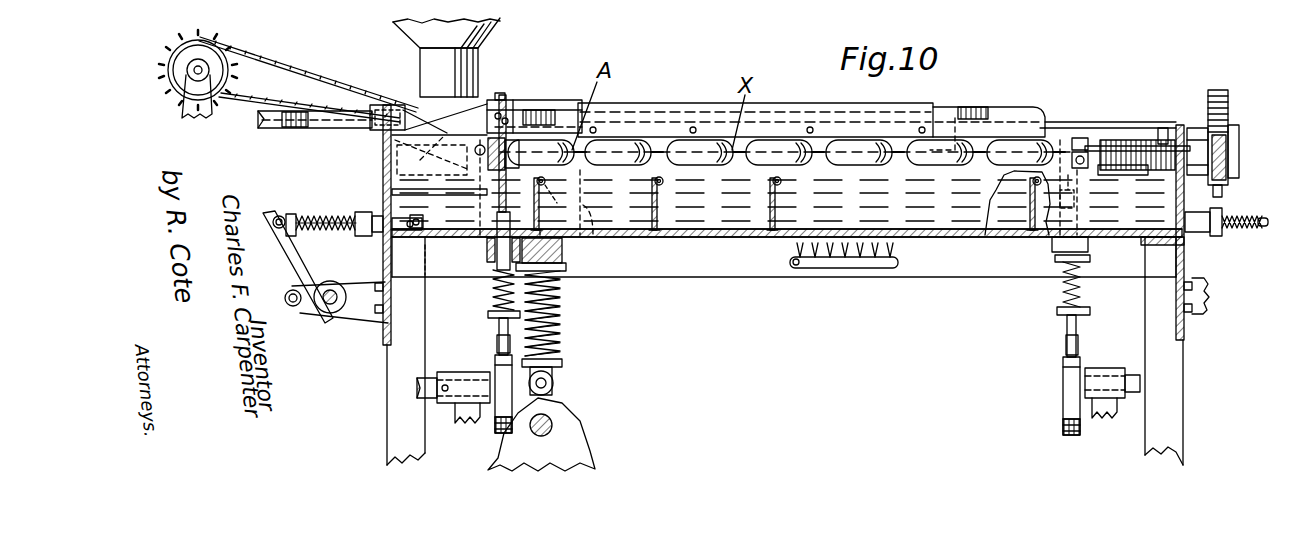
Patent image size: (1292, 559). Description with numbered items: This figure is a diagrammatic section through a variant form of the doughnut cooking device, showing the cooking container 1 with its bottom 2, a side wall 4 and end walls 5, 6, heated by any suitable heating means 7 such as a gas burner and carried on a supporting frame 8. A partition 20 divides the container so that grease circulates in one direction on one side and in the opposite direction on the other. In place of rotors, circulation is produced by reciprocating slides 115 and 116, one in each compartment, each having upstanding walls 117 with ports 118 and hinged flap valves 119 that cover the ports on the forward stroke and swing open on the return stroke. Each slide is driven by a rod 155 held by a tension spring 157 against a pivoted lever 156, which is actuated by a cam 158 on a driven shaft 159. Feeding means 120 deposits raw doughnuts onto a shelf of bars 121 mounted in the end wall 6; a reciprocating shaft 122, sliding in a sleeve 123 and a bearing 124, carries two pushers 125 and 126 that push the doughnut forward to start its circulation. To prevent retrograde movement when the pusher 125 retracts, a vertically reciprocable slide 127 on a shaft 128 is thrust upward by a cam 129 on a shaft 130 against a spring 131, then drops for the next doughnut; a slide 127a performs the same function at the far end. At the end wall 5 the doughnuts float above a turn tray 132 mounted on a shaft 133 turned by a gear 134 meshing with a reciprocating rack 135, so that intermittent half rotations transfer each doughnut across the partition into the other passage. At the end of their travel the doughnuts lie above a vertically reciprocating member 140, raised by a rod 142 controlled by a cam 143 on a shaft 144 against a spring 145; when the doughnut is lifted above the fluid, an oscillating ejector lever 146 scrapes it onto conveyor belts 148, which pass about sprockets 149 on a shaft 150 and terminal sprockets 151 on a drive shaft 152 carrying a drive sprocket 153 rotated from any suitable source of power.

The cooking container 1 is at (767, 242).
The bottom 2 is at (925, 240).
The side wall 4 is at (1062, 121).
The end wall 5 is at (1183, 188).
The end wall 6 is at (392, 191).
The heating means 7 is at (838, 268).
The supporting frame 8 is at (385, 390).
The partition 20 is at (945, 138).
The reciprocating slide 115 is at (735, 233).
The reciprocating slide 116 is at (992, 240).
The upstanding walls 117 is at (655, 186).
The ports 118 is at (772, 207).
The hinged flap valves 119 is at (543, 183).
The feeding means 120 is at (470, 72).
The bars 121 is at (405, 160).
The reciprocating shaft 122 is at (1000, 107).
The sleeve 123 is at (630, 112).
The bearing 124 is at (383, 104).
The pusher 125 is at (505, 130).
The pusher 126 is at (1162, 127).
The vertically reciprocable slide 127 is at (525, 110).
The slide 127a is at (1080, 188).
The shaft 128 is at (493, 300).
The cam 129 is at (495, 365).
The shaft 130 is at (430, 378).
The spring 131 is at (493, 284).
The turn tray 132 is at (1112, 140).
The shaft 133 is at (1197, 127).
The gear 134 is at (1239, 140).
The reciprocating rack 135 is at (1228, 98).
The vertically reciprocating member 140 is at (592, 236).
The shaft or rod 142 is at (560, 345).
The cam 143 is at (593, 451).
The shaft 144 is at (552, 420).
The spring 145 is at (560, 325).
The ejector lever 146 is at (560, 103).
The conveyor belts 148 is at (308, 80).
The sprockets 149 is at (392, 148).
The shaft 150 is at (478, 143).
The terminal sprockets 151 is at (245, 65).
The drive shaft 152 is at (198, 66).
The drive sprocket 153 is at (178, 50).
The rod 155 is at (358, 236).
The pivoted lever 156 is at (268, 212).
The tension spring 157 is at (318, 232).
The cam 158 is at (333, 287).
The driven shaft 159 is at (337, 310).